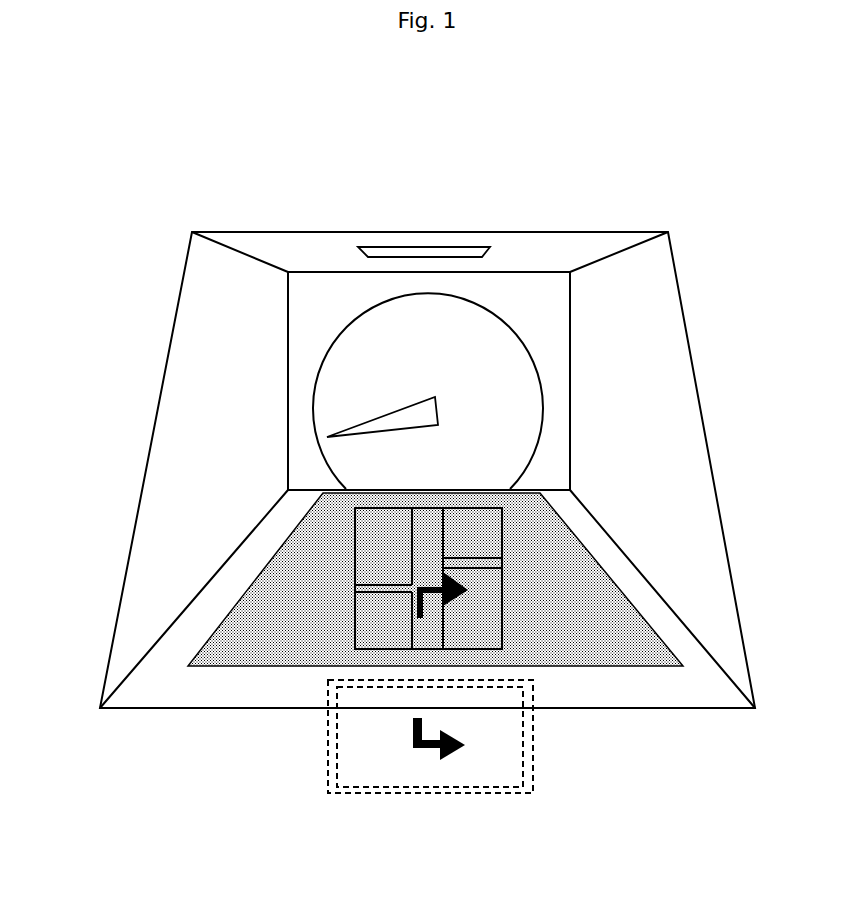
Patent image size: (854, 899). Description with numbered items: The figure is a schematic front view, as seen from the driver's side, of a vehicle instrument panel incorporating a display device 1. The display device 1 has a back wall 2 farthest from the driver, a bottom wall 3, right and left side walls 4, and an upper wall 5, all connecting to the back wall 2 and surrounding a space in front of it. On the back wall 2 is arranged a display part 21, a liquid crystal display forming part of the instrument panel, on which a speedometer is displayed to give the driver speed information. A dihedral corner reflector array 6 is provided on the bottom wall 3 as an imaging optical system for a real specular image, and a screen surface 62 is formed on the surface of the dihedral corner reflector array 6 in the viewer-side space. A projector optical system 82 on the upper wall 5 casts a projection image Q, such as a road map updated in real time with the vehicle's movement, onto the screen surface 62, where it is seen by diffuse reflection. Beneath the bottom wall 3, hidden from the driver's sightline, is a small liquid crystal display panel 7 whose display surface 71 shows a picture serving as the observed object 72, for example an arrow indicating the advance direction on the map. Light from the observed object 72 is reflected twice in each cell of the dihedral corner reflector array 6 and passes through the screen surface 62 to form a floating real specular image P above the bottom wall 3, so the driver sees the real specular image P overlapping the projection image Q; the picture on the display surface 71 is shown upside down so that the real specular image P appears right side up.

The display device 1 is at (422, 185).
The back wall 2 is at (550, 360).
The display part 21 is at (350, 334).
The bottom wall 3 is at (698, 702).
The side walls 4 is at (196, 290).
The upper wall 5 is at (558, 236).
The projector optical system 82 is at (462, 252).
The dihedral corner reflector array 6 is at (416, 624).
The screen surface 62 is at (308, 602).
The projection image Q is at (473, 548).
The real specular image P is at (468, 590).
The liquid crystal display panel 7 is at (537, 733).
The display surface 71 is at (432, 775).
The observed object 72 is at (465, 743).